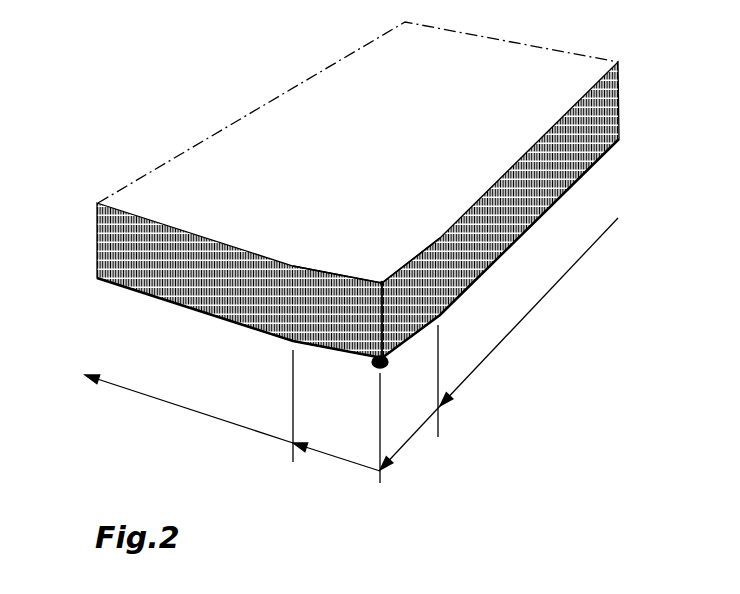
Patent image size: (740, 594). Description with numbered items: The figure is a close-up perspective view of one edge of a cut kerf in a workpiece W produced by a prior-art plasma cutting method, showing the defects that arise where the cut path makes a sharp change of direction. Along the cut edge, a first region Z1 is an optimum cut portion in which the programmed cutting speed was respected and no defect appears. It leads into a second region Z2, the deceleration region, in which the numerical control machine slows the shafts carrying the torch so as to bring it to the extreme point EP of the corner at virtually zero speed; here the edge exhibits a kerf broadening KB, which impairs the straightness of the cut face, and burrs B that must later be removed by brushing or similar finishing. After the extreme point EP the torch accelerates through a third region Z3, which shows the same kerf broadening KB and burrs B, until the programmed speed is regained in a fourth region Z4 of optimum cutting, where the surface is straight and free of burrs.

The workpiece W is at (363, 68).
The kerf broadening KB is at (417, 245).
The extreme point EP is at (382, 283).
The burrs B is at (393, 372).
The first region Z1 is at (528, 327).
The second region Z2 is at (416, 428).
The third region Z3 is at (336, 428).
The fourth region Z4 is at (189, 414).